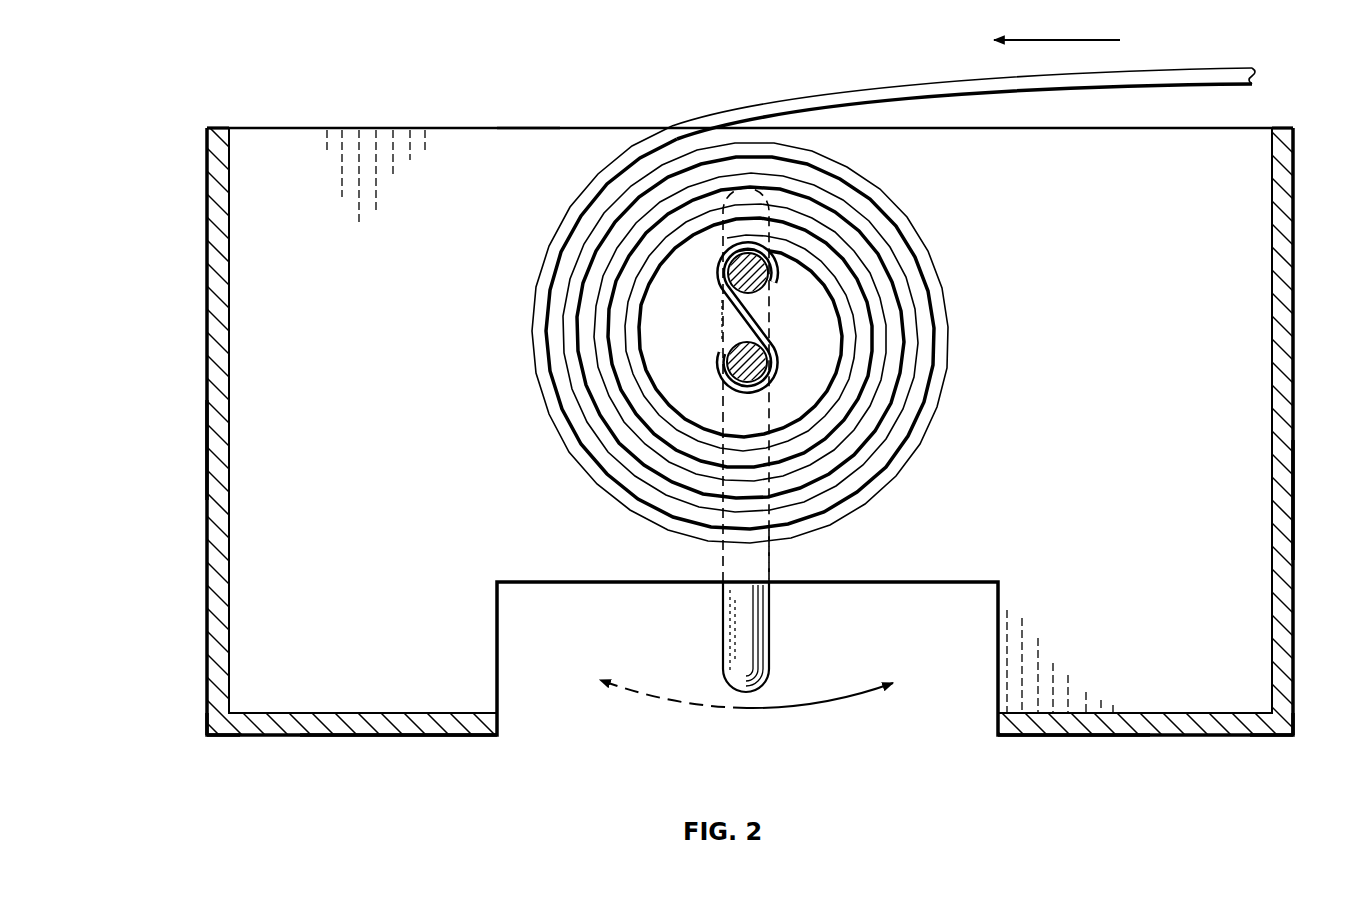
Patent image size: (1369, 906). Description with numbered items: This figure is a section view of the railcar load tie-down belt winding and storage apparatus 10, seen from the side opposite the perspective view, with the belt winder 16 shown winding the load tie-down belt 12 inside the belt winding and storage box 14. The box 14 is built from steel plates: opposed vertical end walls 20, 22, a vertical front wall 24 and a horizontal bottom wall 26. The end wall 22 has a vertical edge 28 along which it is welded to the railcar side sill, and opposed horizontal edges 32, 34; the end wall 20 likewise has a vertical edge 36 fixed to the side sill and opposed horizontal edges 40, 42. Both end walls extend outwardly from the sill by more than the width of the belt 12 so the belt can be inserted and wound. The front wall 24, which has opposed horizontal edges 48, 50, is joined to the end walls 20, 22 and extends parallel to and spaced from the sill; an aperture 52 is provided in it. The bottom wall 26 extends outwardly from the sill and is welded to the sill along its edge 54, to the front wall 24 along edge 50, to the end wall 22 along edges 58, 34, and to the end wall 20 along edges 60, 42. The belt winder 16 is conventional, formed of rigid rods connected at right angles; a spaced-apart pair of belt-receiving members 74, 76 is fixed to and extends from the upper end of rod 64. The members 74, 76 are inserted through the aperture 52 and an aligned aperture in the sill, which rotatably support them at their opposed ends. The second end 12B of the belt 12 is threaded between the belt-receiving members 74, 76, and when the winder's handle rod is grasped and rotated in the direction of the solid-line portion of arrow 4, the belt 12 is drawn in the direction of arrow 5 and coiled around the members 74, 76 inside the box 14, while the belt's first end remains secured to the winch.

The railcar load tie-down belt winding and storage apparatus 10 is at (382, 73).
The load tie-down belt 12 is at (730, 103).
The second end of belt 12B is at (666, 353).
The belt winding and storage box 14 is at (363, 123).
The belt winder 16 is at (720, 608).
The end wall 20 is at (1266, 333).
The end wall 22 is at (238, 362).
The front wall 24 is at (1103, 425).
The bottom wall 26 is at (352, 712).
The vertical edge 28 is at (234, 447).
The horizontal edge 32 is at (216, 126).
The horizontal edge 34 is at (212, 740).
The vertical edge 36 is at (1276, 497).
The horizontal edge 40 is at (1284, 127).
The horizontal edge 42 is at (1280, 740).
The horizontal edge 48 is at (518, 126).
The horizontal edge 50 is at (410, 740).
The aperture 52 is at (808, 336).
The horizontal edge 54 is at (1155, 714).
The horizontal edge 58 is at (208, 722).
The horizontal edge 60 is at (1296, 725).
The rigid rod 64 is at (774, 561).
The belt-receiving member 74 is at (721, 358).
The belt-receiving member 76 is at (782, 290).
The rotation arrow 4 is at (746, 719).
The belt drawing direction arrow 5 is at (1121, 40).